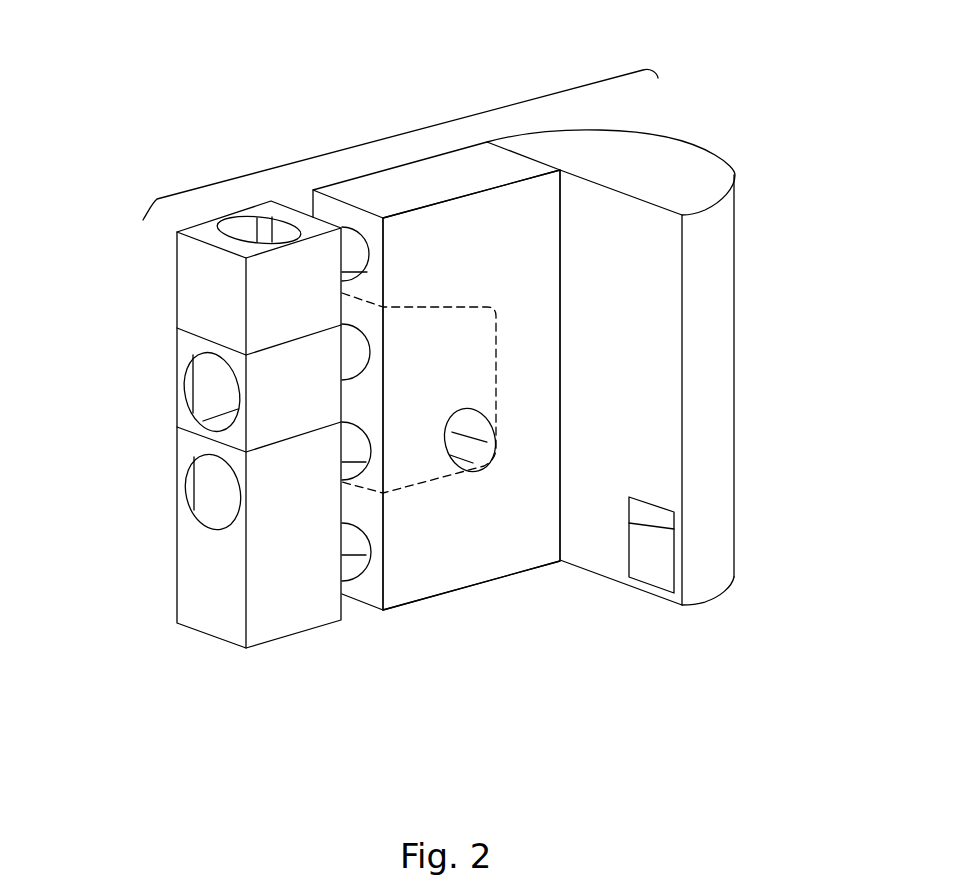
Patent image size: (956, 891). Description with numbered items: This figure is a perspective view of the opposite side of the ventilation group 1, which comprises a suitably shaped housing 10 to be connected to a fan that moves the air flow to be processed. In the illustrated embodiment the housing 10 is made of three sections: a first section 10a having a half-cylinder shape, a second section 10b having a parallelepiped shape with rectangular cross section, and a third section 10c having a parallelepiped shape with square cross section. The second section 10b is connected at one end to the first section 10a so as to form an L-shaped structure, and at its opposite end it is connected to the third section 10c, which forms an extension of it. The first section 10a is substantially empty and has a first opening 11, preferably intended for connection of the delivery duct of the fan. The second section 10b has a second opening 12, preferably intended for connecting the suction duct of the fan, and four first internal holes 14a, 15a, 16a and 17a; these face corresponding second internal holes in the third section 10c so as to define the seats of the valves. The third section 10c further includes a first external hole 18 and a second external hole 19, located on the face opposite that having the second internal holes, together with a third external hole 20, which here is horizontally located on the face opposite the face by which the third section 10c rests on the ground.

The ventilation group 1 is at (118, 562).
The housing 10 is at (430, 125).
The first section 10a is at (608, 367).
The second section 10b is at (520, 573).
The third section 10c is at (267, 325).
The first opening 11 is at (657, 552).
The second opening 12 is at (468, 448).
The first internal hole 14a is at (352, 250).
The first internal hole 15a is at (357, 345).
The first internal hole 16a is at (353, 447).
The first internal hole 17a is at (352, 540).
The first external hole 18 is at (208, 387).
The second external hole 19 is at (208, 482).
The third external hole 20 is at (248, 233).